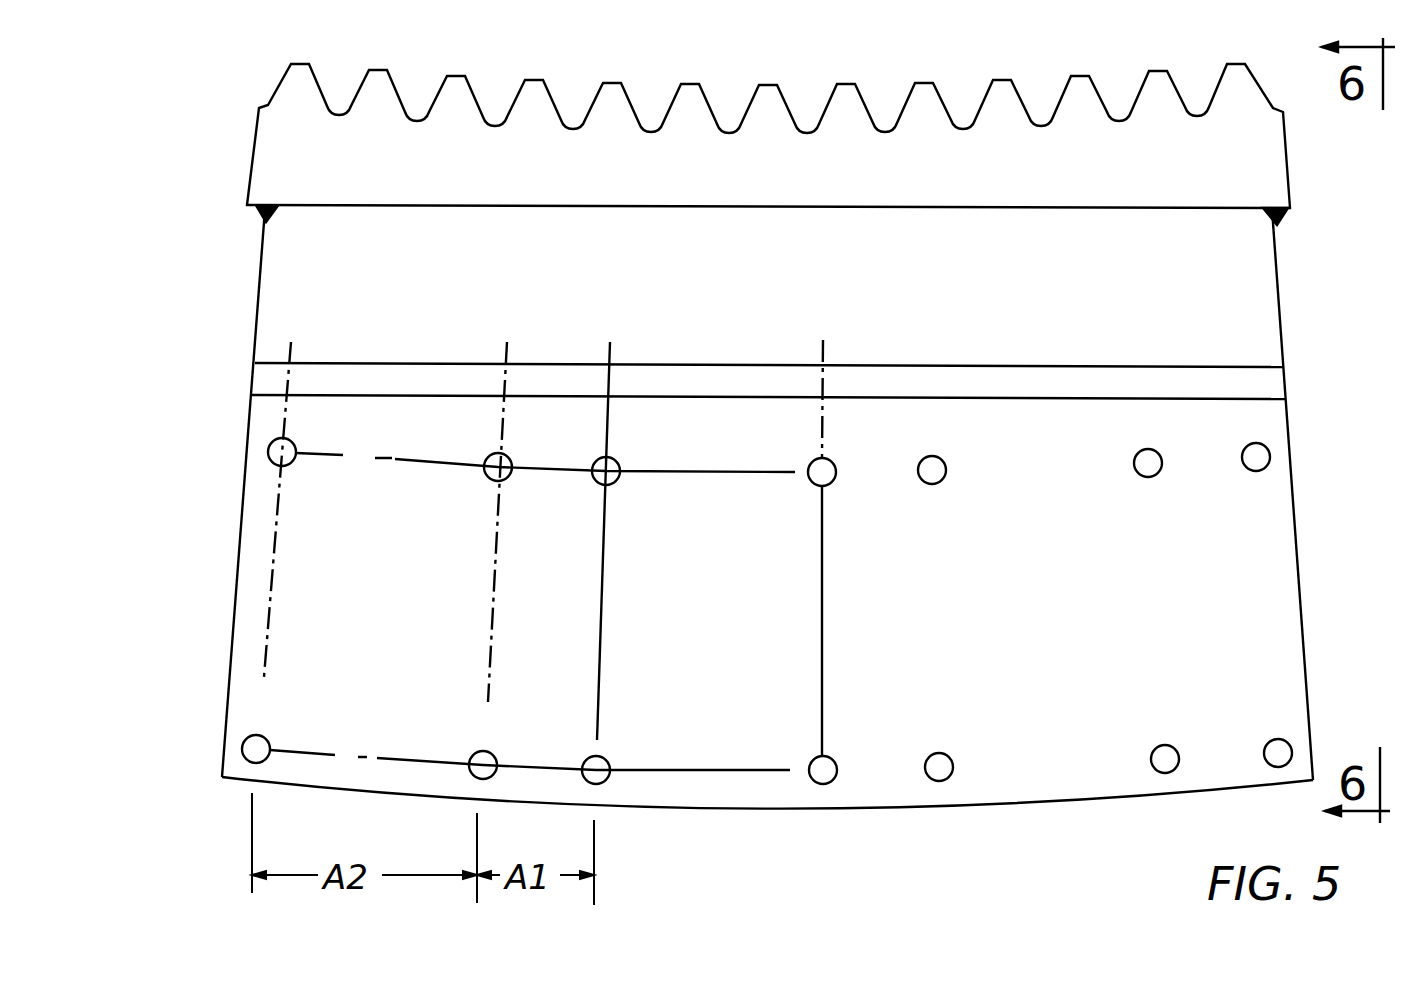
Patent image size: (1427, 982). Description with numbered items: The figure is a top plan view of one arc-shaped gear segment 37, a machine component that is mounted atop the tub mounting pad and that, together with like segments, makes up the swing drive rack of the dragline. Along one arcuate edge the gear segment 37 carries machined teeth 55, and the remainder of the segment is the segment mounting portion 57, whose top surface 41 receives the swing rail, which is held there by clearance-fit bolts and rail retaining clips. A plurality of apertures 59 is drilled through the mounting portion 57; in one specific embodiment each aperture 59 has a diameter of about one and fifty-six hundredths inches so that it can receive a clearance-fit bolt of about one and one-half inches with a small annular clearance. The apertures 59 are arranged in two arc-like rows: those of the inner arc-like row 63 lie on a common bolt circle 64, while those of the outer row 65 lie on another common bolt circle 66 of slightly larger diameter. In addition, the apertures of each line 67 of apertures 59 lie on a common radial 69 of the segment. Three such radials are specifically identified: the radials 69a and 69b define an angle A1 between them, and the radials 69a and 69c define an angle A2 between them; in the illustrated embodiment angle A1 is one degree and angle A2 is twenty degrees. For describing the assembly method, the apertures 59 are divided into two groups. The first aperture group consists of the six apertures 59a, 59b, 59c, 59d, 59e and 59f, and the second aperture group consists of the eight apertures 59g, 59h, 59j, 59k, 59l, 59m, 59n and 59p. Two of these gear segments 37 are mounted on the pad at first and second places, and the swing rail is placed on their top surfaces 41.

The machined teeth 55 is at (475, 92).
The segment mounting portion 57 is at (236, 556).
The top surface 41 is at (1276, 563).
The outer row 65 is at (204, 742).
The gear segment 37 is at (236, 365).
The inner arc-like row 63 is at (230, 436).
The common bolt circle 64 is at (346, 455).
The common bolt circle 66 is at (338, 756).
The line of apertures 67 is at (836, 418).
The common radial 69 is at (826, 548).
The radial 69a is at (509, 345).
The radial 69b is at (612, 345).
The radial 69c is at (293, 347).
The apertures 59 is at (486, 528).
The aperture 59a is at (613, 484).
The aperture 59b is at (602, 756).
The aperture 59c is at (820, 486).
The aperture 59d is at (820, 757).
The aperture 59e is at (1270, 453).
The aperture 59f is at (1286, 742).
The aperture 59g is at (268, 460).
The aperture 59h is at (248, 738).
The aperture 59j is at (494, 482).
The aperture 59k is at (480, 751).
The aperture 59l is at (932, 484).
The aperture 59m is at (941, 752).
The aperture 59n is at (1157, 474).
The aperture 59p is at (1170, 745).